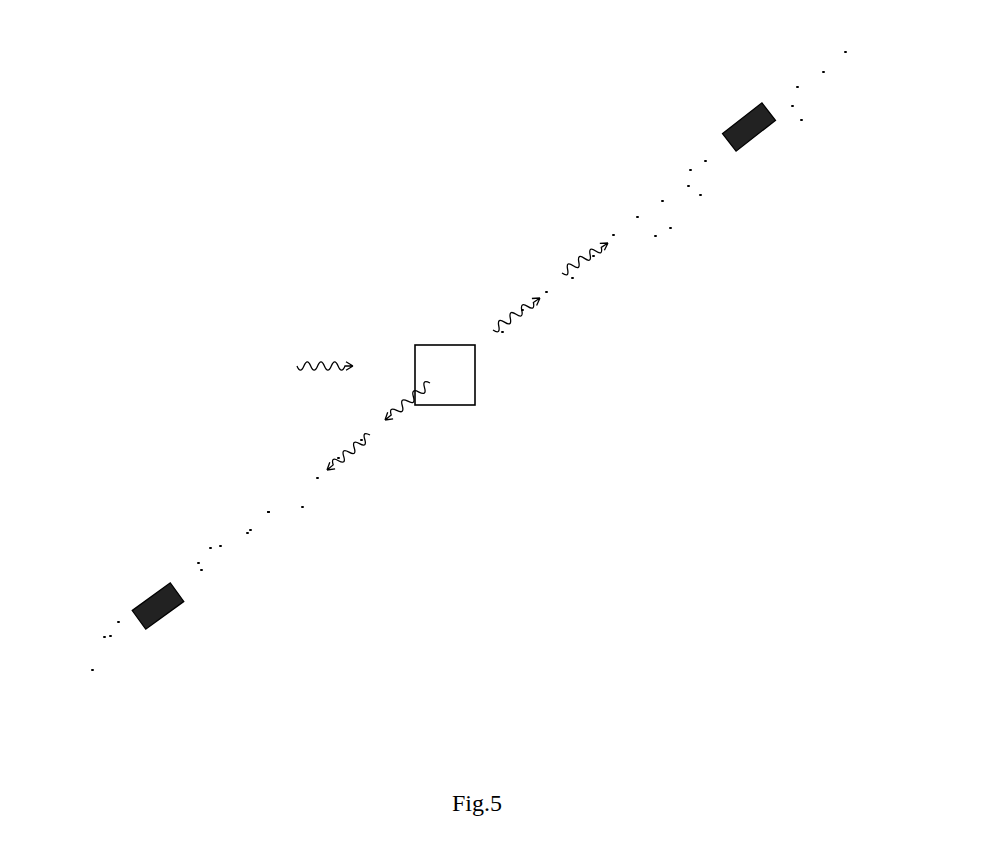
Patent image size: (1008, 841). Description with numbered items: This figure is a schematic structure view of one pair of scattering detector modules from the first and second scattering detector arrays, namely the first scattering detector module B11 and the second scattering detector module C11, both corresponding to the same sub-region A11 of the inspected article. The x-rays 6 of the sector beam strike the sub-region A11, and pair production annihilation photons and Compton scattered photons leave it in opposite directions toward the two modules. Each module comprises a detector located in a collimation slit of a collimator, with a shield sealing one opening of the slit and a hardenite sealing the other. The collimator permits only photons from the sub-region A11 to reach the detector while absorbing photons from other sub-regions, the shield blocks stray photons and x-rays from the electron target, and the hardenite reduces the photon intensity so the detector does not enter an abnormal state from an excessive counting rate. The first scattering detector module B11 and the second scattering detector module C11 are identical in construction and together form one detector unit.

The x-rays 6 is at (325, 353).
The sub-region A11 is at (445, 375).
The first scattering detector module B11 is at (221, 658).
The second scattering detector module C11 is at (663, 115).